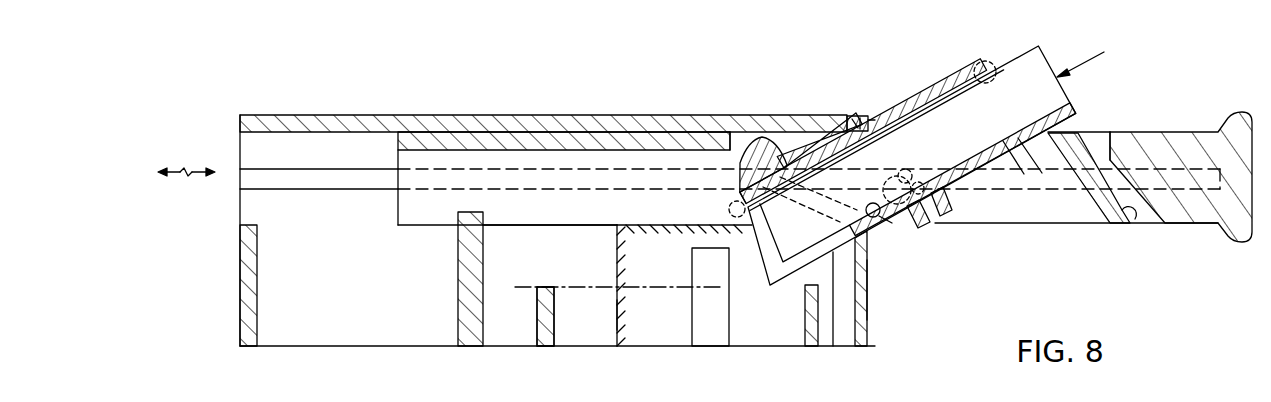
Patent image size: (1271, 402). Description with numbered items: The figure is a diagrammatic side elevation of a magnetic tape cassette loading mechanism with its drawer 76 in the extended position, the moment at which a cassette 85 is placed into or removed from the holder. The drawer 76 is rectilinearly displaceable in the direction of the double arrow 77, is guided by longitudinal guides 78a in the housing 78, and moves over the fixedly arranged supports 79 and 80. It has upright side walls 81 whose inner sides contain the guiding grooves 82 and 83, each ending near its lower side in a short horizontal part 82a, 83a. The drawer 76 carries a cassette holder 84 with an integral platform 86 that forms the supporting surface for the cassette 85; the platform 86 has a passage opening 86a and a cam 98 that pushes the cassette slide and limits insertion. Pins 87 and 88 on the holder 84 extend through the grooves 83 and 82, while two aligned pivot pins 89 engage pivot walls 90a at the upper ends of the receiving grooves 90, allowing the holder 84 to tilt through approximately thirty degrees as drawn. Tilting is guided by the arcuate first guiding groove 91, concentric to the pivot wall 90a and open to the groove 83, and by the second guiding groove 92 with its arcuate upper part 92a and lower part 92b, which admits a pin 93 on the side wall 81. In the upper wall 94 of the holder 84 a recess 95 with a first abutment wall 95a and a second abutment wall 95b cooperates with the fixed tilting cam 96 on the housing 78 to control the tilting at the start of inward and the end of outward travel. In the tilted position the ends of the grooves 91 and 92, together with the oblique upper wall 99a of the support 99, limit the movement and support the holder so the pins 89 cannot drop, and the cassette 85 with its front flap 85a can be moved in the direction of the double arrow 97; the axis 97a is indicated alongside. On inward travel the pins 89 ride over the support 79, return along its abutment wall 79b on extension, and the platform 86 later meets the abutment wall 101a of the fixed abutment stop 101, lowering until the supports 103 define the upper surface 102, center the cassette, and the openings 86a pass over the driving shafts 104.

The drawer 76 is at (1200, 131).
The double arrow 77 is at (186, 189).
The housing 78 is at (383, 115).
The longitudinal guides 78a is at (330, 186).
The supports 79 is at (644, 332).
The abutment wall 79b is at (614, 312).
The support 80 is at (250, 340).
The side walls 81 is at (1093, 142).
The guiding groove 82 is at (1102, 212).
The horizontal part 82a is at (1131, 220).
The guiding groove 83 is at (768, 152).
The horizontal part 83a is at (836, 222).
The cassette holder 84 is at (915, 95).
The cassette 85 is at (1028, 70).
The front flap 85a is at (773, 254).
The platform 86 is at (1026, 170).
The passage opening 86a is at (1008, 180).
The pin 87 is at (728, 210).
The pin 88 is at (988, 61).
The pivot pins 89 is at (880, 218).
The receiving grooves 90 is at (905, 220).
The pivot walls 90a is at (891, 181).
The first guiding groove 91 is at (733, 192).
The second guiding groove 92 is at (927, 214).
The arcuate upper part 92a is at (916, 182).
The lower part 92b is at (935, 226).
The pin 93 is at (898, 169).
The upper wall 94 is at (810, 142).
The recess 95 is at (863, 117).
The first abutment wall 95a is at (875, 117).
The second abutment wall 95b is at (850, 120).
The tilting cam 96 is at (858, 122).
The double arrow 97 is at (1086, 58).
The axis line 97a is at (617, 271).
The cam 98 is at (870, 299).
The support 99 is at (862, 321).
The upper wall 99a is at (868, 290).
The abutment stop 101 is at (475, 338).
The abutment wall 101a is at (484, 302).
The upper surface 102 is at (547, 300).
The supports 103 is at (545, 340).
The driving shafts 104 is at (708, 334).